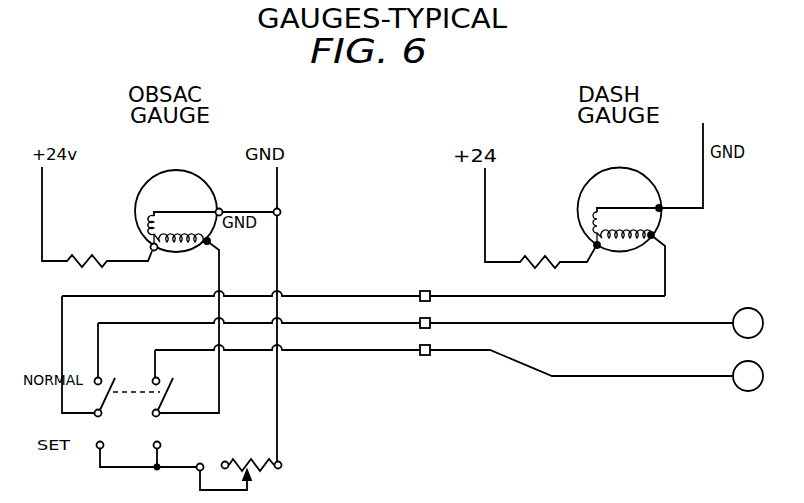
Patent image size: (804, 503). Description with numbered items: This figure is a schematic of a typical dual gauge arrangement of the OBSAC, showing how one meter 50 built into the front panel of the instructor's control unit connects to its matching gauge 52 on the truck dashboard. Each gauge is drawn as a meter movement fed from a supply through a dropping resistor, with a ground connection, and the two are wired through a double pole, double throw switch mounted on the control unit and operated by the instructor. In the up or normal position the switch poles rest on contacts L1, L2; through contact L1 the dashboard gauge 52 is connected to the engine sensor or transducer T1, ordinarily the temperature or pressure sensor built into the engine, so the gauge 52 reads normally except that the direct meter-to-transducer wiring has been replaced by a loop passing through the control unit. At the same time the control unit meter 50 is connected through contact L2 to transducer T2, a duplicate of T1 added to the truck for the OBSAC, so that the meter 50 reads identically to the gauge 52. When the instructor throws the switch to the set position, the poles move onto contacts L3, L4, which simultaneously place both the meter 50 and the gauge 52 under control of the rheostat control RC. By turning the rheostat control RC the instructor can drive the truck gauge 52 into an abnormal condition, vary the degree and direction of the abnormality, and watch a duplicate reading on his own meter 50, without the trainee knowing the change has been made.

The meter 50 is at (187, 168).
The gauge 52 is at (638, 170).
The transducer T1 is at (748, 323).
The transducer T2 is at (748, 376).
The contact L1 is at (105, 370).
The contact L2 is at (164, 383).
The contact L3 is at (147, 455).
The contact L4 is at (170, 456).
The rheostat control RC is at (241, 464).